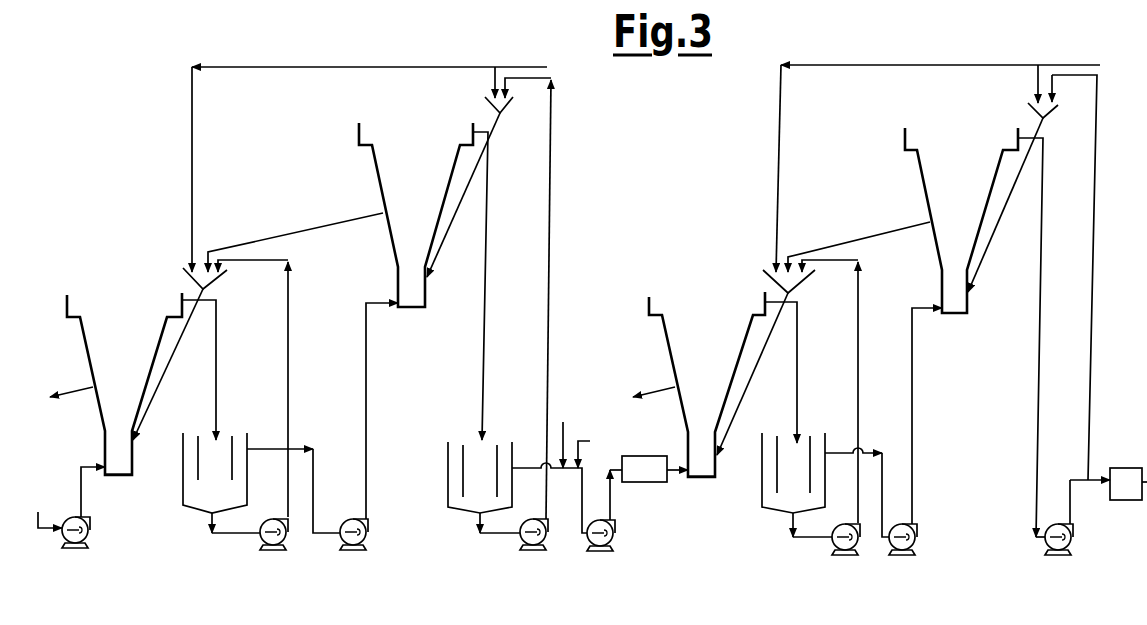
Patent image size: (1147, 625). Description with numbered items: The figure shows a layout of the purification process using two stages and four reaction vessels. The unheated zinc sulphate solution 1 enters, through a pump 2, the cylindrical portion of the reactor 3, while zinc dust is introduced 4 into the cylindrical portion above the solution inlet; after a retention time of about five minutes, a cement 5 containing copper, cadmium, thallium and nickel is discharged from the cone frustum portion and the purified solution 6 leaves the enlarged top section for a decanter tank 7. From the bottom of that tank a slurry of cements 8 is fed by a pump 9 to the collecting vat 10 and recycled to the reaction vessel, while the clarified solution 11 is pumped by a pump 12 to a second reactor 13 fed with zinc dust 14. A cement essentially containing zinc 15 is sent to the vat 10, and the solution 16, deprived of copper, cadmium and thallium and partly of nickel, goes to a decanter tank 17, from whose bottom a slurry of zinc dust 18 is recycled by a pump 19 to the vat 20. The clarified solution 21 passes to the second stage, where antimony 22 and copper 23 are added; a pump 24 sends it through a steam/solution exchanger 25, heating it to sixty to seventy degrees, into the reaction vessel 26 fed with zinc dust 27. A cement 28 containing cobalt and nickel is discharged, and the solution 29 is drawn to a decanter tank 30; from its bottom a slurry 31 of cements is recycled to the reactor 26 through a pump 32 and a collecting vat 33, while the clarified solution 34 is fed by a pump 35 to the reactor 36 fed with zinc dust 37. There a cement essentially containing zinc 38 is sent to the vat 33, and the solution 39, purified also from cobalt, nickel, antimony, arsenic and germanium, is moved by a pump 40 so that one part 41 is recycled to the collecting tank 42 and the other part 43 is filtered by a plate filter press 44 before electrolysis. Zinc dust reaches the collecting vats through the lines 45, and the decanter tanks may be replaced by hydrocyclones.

The zinc sulphate solution 1 is at (44, 508).
The pump 2 is at (88, 534).
The reactor 3 is at (120, 476).
The zinc dust introduction 4 is at (152, 417).
The cement 5 is at (84, 389).
The purified solution 6 is at (218, 317).
The decanter tank 7 is at (212, 495).
The slurry of cements 8 is at (235, 534).
The pump 9 is at (286, 538).
The collecting vat 10 is at (218, 279).
The clarified solution 11 is at (268, 449).
The pump 12 is at (366, 535).
The second reactor 13 is at (412, 309).
The zinc dust feed 14 is at (443, 245).
The cement essentially containing zinc 15 is at (313, 228).
The solution 16 is at (488, 188).
The decanter tank 17 is at (478, 498).
The slurry of zinc dust 18 is at (500, 534).
The pump 19 is at (545, 537).
The vat 20 is at (515, 107).
The clarified solution 21 is at (523, 468).
The antimony 22 is at (563, 431).
The copper 23 is at (595, 448).
The pump 24 is at (612, 538).
The steam/solution exchanger 25 is at (645, 483).
The reaction vessel 26 is at (705, 479).
The zinc dust 27 is at (733, 428).
The cement 28 is at (653, 390).
The solution 29 is at (800, 330).
The decanter tank 30 is at (790, 497).
The slurry of cements 31 is at (800, 540).
The pump 32 is at (837, 544).
The collecting vat 33 is at (813, 277).
The clarified solution 34 is at (837, 452).
The pump 35 is at (915, 543).
The reactor 36 is at (952, 318).
The zinc dust 37 is at (987, 253).
The cement essentially containing zinc 38 is at (872, 235).
The solution 39 is at (1045, 147).
The pump 40 is at (1073, 537).
The recycled portion 41 is at (1092, 257).
The collecting tank 42 is at (1055, 118).
The filtered portion 43 is at (1096, 482).
The plate filter press 44 is at (1130, 468).
The lines 45 is at (547, 67).